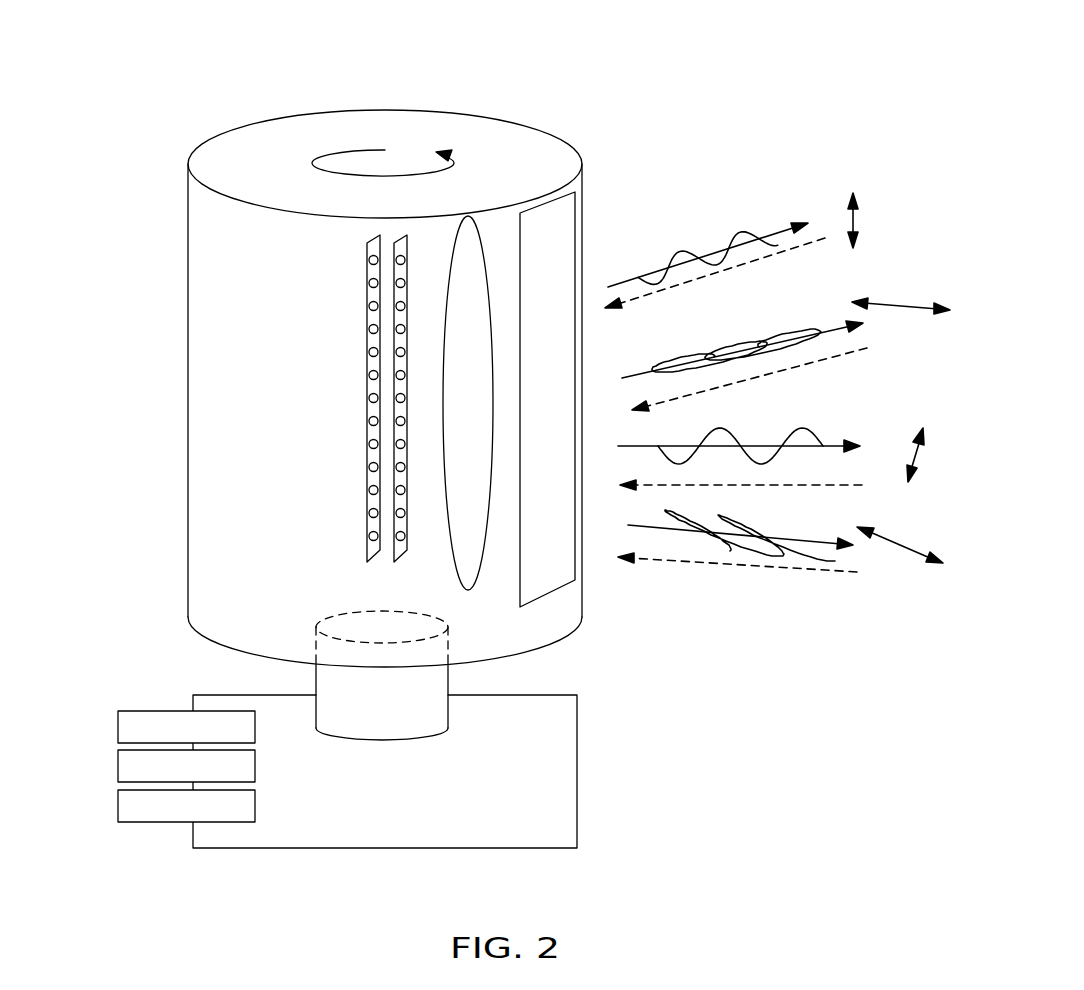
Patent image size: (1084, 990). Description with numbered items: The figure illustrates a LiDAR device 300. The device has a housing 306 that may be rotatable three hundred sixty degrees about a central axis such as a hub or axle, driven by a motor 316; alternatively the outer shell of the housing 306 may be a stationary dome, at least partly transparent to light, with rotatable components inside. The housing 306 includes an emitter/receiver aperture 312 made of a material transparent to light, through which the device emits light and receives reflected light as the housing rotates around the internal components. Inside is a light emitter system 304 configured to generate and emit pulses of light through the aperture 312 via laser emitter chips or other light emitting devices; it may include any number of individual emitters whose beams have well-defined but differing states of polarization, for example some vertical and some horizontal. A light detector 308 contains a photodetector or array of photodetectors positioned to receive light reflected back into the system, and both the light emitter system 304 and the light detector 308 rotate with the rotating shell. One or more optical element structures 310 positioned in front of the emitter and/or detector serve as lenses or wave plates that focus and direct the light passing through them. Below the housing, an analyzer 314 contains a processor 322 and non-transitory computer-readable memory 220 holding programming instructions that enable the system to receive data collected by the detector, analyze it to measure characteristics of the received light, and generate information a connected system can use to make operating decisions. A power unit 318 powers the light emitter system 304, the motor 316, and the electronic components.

The LiDAR device 300 is at (258, 82).
The light emitter system 304 is at (400, 236).
The housing 306 is at (189, 222).
The light detector 308 is at (366, 257).
The optical element structure 310 is at (478, 228).
The emitter/receiver aperture 312 is at (555, 200).
The analyzer 314 is at (578, 775).
The motor 316 is at (384, 730).
The power unit 318 is at (118, 726).
The memory 220 is at (118, 766).
The processor 322 is at (118, 806).